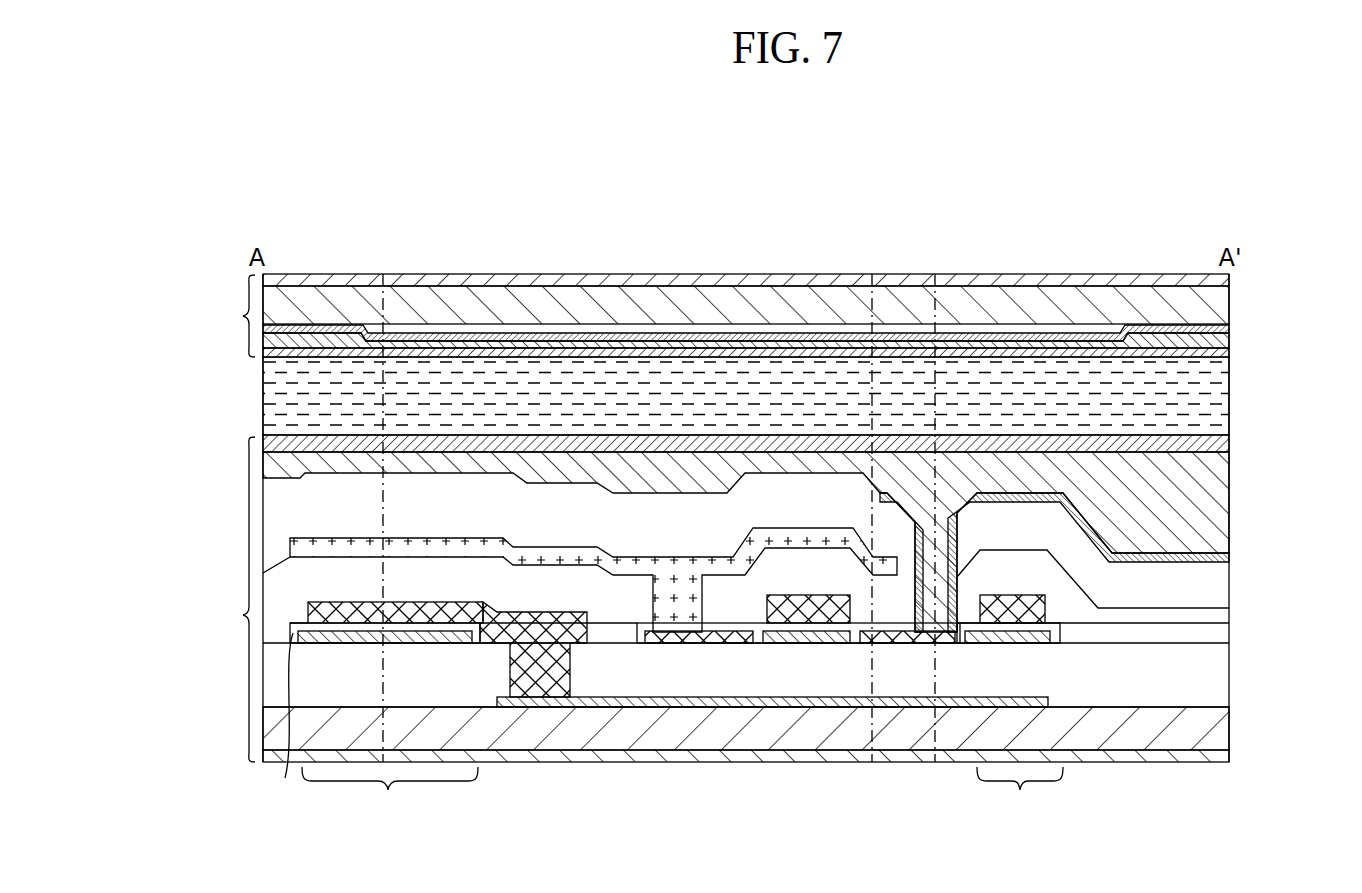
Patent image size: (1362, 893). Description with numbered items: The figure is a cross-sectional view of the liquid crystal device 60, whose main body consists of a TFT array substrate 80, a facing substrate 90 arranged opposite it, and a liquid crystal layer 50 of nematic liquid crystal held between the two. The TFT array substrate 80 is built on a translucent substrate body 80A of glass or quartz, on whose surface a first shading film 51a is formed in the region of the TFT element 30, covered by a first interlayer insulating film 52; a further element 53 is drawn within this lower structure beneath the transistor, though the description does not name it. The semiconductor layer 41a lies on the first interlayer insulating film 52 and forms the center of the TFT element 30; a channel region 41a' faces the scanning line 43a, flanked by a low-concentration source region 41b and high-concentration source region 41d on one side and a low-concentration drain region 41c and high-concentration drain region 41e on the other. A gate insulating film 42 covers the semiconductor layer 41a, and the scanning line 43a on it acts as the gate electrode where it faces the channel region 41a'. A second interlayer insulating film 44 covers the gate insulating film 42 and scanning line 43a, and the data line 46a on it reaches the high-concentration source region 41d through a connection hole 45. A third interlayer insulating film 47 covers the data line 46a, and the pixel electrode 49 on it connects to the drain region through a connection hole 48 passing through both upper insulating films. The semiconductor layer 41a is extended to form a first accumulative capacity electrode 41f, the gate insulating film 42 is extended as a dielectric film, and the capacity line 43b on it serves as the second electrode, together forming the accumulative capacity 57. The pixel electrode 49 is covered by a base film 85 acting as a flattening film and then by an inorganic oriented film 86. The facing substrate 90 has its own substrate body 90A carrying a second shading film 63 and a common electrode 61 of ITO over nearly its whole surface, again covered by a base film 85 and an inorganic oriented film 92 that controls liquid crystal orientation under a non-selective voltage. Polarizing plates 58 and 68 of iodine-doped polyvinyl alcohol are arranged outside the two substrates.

The liquid crystal device 60 is at (331, 221).
The second shading film 63 is at (533, 326).
The connection hole 48 is at (944, 530).
The polarizing plate 68 is at (1230, 280).
The substrate body 90A is at (1230, 303).
The common electrode 61 is at (1230, 329).
The base film 85 is at (1230, 343).
The inorganic oriented film 92 is at (1230, 354).
The liquid crystal layer 50 is at (1230, 402).
The inorganic oriented film 86 is at (1230, 445).
The pixel electrode 49 is at (1230, 558).
The third interlayer insulating film 47 is at (1212, 588).
The second interlayer insulating film 44 is at (1212, 622).
The first interlayer insulating film 52 is at (1218, 675).
The substrate body 80A is at (1218, 735).
The polarizing plate 58 is at (1230, 757).
The facing substrate 90 is at (230, 316).
The TFT array substrate 80 is at (230, 599).
The data line 46a is at (532, 550).
The connection hole 45 is at (699, 600).
The capacity line 43b is at (402, 602).
The scanning line 43a is at (790, 596).
The gate insulating film 42 is at (1100, 627).
The first accumulative capacity electrode 41f is at (423, 644).
The high-concentration source region 41d is at (675, 644).
The low-concentration source region 41b is at (757, 644).
The channel region 41a' is at (806, 659).
The low-concentration drain region 41c is at (857, 641).
The high-concentration drain region 41e is at (948, 643).
The semiconductor layer 41a is at (751, 723).
The TFT element 30 is at (798, 703).
The first shading film 51a is at (903, 708).
The scanning line 53 is at (556, 683).
The accumulative capacity 57 is at (682, 796).